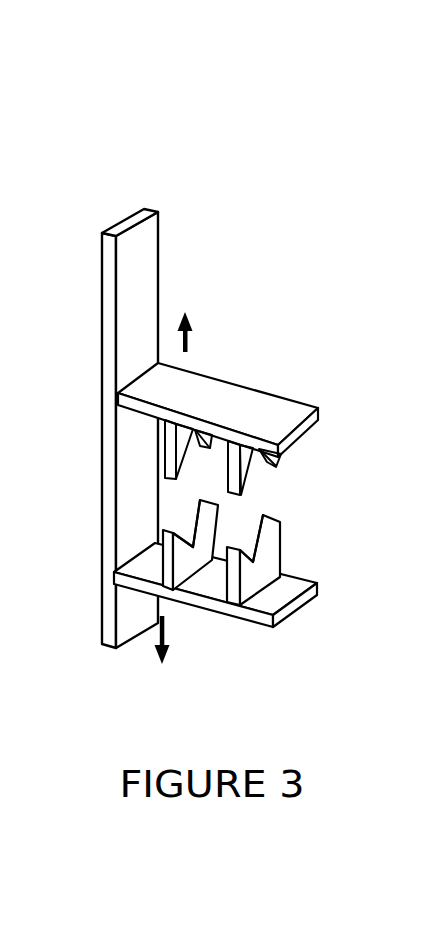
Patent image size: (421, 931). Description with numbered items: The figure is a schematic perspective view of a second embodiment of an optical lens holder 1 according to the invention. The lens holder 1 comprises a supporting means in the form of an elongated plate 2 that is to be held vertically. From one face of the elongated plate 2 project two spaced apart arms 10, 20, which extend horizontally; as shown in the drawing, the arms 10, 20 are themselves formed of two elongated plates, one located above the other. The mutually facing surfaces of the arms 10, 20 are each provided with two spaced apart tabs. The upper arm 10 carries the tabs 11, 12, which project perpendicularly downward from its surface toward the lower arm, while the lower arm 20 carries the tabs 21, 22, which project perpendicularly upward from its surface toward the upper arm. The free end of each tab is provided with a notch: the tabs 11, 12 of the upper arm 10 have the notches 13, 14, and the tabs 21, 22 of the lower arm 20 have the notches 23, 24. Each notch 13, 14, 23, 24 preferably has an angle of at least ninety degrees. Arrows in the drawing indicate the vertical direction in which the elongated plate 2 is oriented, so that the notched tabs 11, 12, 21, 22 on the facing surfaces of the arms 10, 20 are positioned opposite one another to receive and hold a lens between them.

The lens holder 1 is at (220, 336).
The elongated plate 2 is at (150, 250).
The arm 10 is at (248, 392).
The tab 11 is at (249, 482).
The tab 12 is at (170, 440).
The notch 13 is at (275, 464).
The notch 14 is at (195, 436).
The arm 20 is at (263, 626).
The tab 21 is at (247, 580).
The tab 22 is at (165, 548).
The notch 23 is at (279, 534).
The notch 24 is at (193, 546).